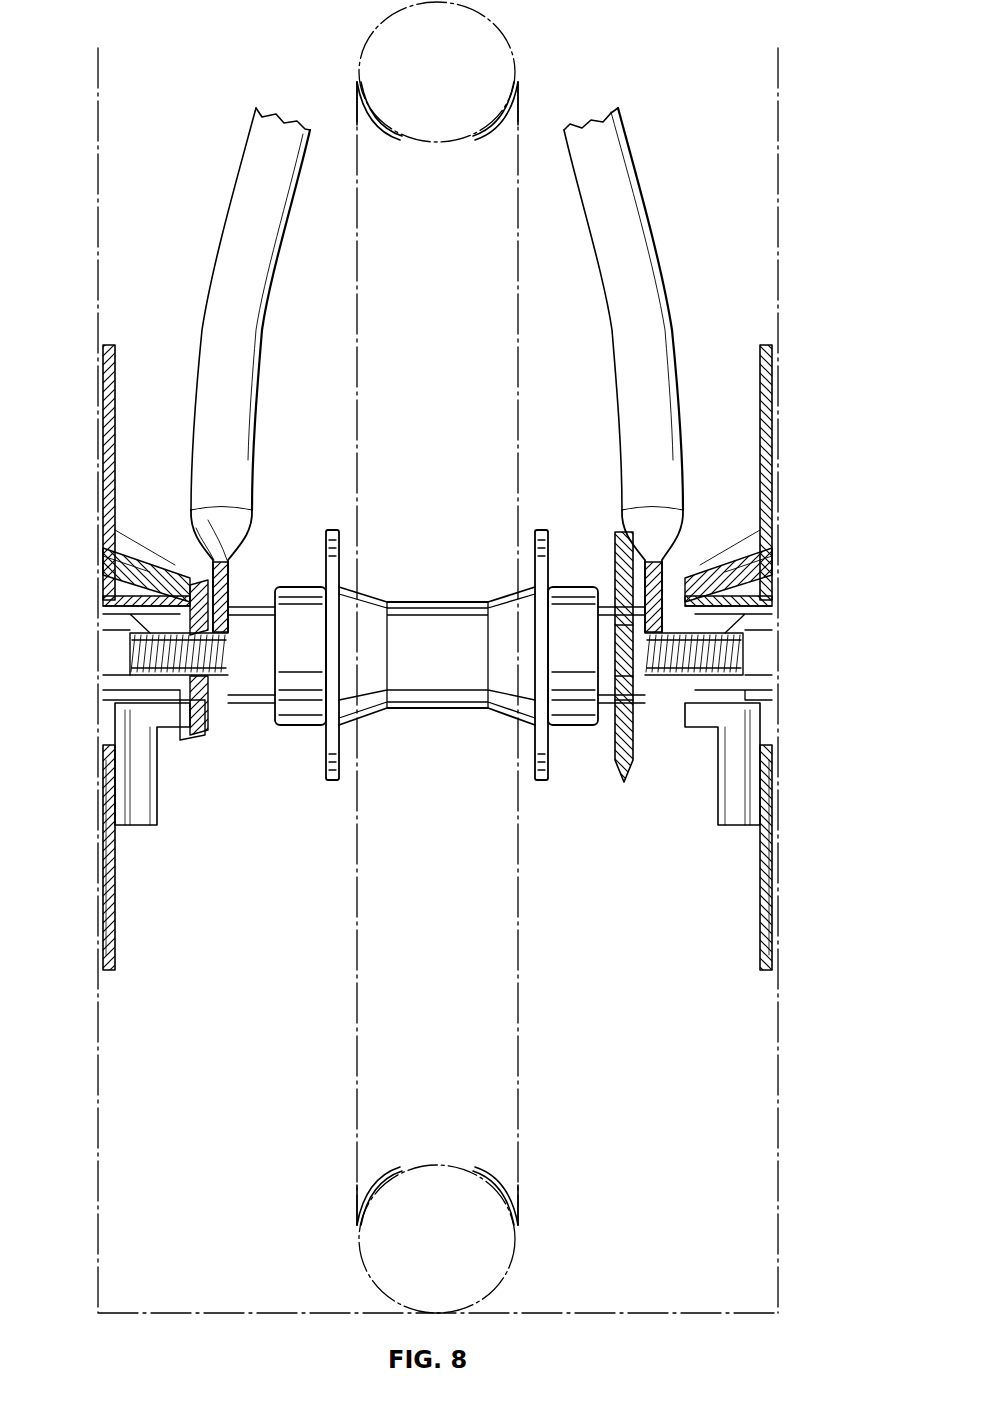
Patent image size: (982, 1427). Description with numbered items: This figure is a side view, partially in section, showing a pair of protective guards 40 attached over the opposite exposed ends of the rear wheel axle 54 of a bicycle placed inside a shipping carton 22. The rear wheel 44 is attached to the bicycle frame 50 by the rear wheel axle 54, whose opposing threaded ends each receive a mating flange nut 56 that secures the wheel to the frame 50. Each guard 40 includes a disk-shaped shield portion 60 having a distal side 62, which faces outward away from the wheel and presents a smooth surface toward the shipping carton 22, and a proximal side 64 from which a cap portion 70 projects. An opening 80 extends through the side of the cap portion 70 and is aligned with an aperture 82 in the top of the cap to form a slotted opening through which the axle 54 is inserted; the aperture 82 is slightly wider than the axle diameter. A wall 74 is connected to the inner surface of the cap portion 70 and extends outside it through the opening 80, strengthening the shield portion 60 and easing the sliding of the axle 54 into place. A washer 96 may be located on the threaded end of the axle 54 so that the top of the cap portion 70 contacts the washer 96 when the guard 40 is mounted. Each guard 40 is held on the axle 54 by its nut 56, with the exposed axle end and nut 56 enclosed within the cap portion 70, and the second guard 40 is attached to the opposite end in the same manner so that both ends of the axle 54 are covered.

The shipping carton 22 is at (781, 170).
The protective guard 40 is at (92, 432).
The rear wheel 44 is at (522, 346).
The bicycle frame 50 is at (628, 183).
The rear wheel axle 54 is at (136, 652).
The flange nut 56 is at (143, 623).
The shield portion 60 is at (116, 348).
The distal side 62 is at (104, 906).
The proximal side 64 is at (114, 906).
The cap portion 70 is at (156, 570).
The wall 74 is at (150, 783).
The opening 80 is at (752, 702).
The aperture 82 is at (195, 704).
The washer 96 is at (232, 590).